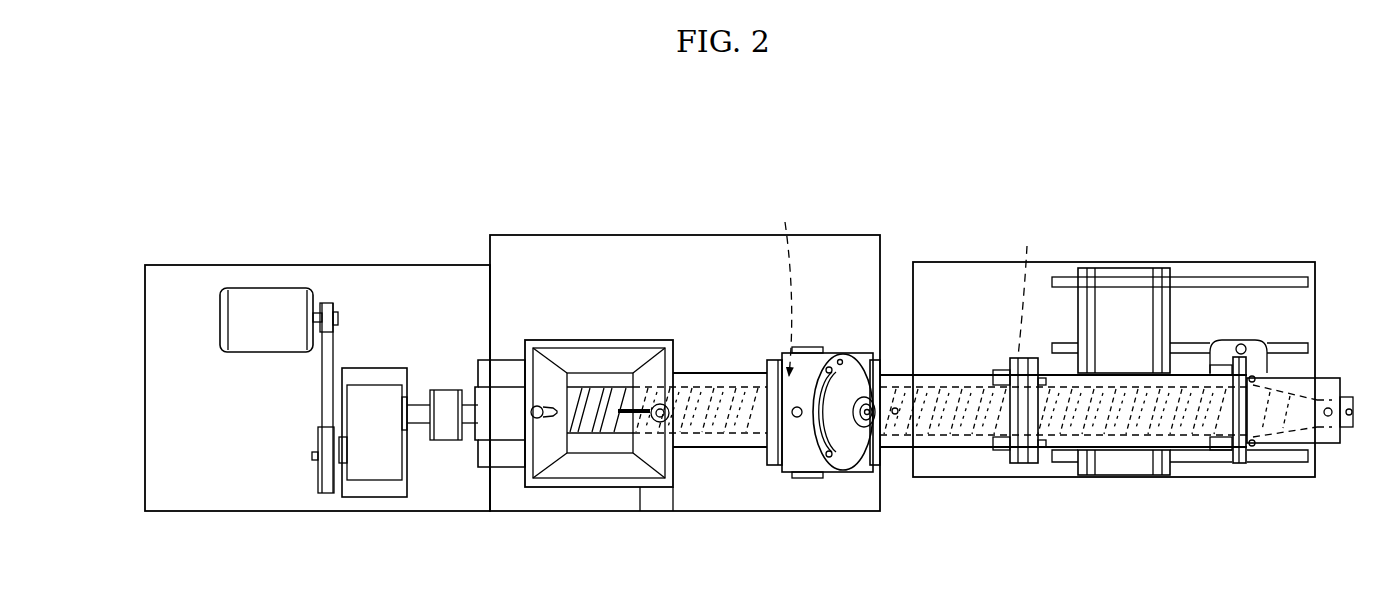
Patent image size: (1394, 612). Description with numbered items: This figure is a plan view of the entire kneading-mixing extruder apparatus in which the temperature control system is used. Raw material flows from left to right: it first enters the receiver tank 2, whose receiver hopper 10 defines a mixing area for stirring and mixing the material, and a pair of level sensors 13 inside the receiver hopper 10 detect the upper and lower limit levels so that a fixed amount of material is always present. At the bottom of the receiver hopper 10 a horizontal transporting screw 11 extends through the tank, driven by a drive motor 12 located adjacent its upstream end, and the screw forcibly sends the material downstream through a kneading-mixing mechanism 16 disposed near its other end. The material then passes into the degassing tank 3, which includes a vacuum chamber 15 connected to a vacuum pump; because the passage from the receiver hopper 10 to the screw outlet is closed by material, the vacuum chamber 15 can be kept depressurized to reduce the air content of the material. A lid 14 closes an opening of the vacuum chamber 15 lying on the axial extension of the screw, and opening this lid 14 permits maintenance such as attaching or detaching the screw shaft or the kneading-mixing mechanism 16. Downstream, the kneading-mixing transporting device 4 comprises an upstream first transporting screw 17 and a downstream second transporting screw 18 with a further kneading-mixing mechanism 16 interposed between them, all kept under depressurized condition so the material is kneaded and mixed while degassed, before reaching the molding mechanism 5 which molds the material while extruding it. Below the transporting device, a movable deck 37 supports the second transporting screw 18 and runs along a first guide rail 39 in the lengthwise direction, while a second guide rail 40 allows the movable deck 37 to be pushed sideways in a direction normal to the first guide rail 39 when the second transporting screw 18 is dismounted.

The receiver tank 2 is at (578, 338).
The degassing tank 3 is at (823, 384).
The kneading-mixing transporting device 4 is at (973, 355).
The molding mechanism 5 is at (1273, 450).
The receiver hopper 10 is at (608, 357).
The horizontal transporting screw 11 is at (716, 372).
The drive motor 12 is at (272, 288).
The level sensors 13 is at (531, 418).
The lid 14 is at (850, 443).
The vacuum chamber 15 is at (807, 457).
The kneading-mixing mechanism 16 is at (918, 289).
The first transporting screw 17 is at (950, 452).
The second transporting screw 18 is at (1198, 452).
The movable deck 37 is at (1123, 453).
The first guide rail 39 is at (1280, 347).
The second guide rail 40 is at (1153, 297).